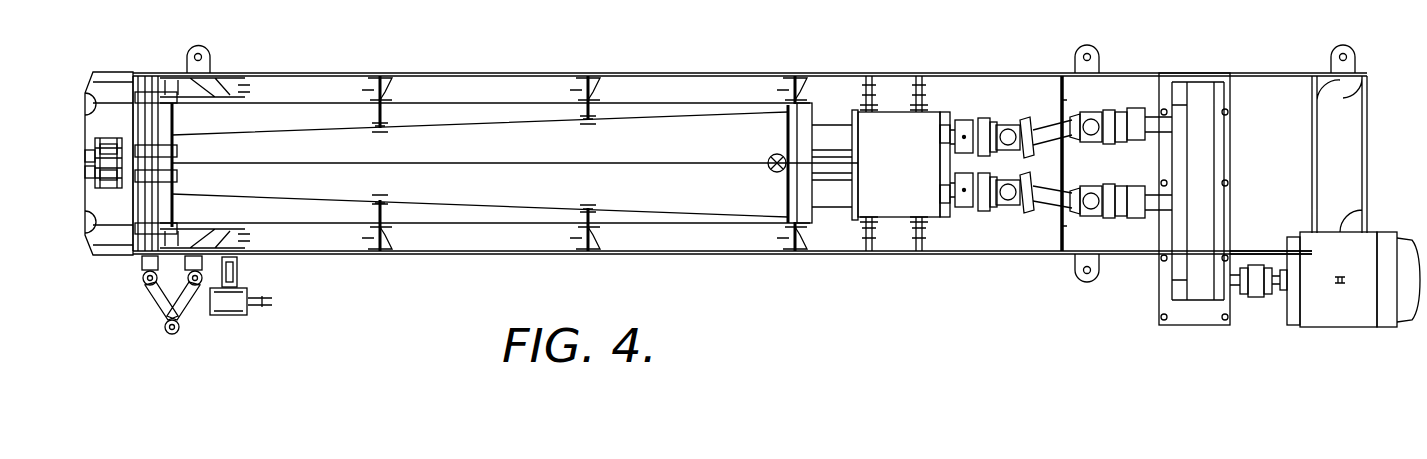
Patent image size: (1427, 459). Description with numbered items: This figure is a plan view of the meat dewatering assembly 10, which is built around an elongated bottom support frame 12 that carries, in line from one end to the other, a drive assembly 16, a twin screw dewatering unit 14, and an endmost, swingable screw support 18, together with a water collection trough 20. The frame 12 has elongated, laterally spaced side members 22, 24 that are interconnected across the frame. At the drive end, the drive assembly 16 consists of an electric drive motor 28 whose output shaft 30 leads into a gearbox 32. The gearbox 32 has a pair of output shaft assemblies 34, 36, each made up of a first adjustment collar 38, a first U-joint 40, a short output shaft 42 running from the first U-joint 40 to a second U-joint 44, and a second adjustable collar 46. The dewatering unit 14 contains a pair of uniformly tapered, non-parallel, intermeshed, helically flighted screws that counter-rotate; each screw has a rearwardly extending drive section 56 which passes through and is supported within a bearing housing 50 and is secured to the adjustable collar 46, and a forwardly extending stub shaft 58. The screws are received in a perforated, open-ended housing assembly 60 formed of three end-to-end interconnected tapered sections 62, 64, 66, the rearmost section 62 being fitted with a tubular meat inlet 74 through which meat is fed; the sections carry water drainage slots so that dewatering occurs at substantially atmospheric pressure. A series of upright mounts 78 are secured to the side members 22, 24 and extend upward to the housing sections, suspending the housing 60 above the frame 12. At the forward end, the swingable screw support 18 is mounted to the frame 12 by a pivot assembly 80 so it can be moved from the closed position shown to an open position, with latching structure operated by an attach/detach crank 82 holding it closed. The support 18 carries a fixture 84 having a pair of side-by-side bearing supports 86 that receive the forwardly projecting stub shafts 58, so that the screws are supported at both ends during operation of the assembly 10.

The meat dewatering assembly 10 is at (775, 322).
The bottom support frame 12 is at (418, 258).
The twin screw dewatering unit 14 is at (545, 101).
The drive assembly 16 is at (1146, 340).
The swingable screw support 18 is at (100, 270).
The water collection trough 20 is at (438, 101).
The side member 22 is at (670, 256).
The side member 24 is at (652, 75).
The electric drive motor 28 is at (1350, 320).
The output shaft 30 is at (1252, 300).
The gearbox 32 is at (1205, 166).
The output shaft assembly 34 is at (1050, 240).
The output shaft assembly 36 is at (1050, 100).
The first adjustment collar 38 is at (1136, 110).
The first U-joint 40 is at (1090, 112).
The short output shaft 42 is at (1055, 192).
The second U-joint 44 is at (1008, 126).
The second adjustable collar 46 is at (962, 120).
The bearing housing 50 is at (893, 200).
The drive section 56 is at (830, 125).
The stub shaft 58 is at (170, 176).
The housing assembly 60 is at (468, 215).
The rearmost housing section 62 is at (690, 122).
The housing section 64 is at (480, 140).
The housing section 66 is at (343, 130).
The tubular meat inlet 74 is at (770, 158).
The upright mounts 78 is at (583, 90).
The pivot assembly 80 is at (148, 330).
The attach/detach crank 82 is at (258, 314).
The fixture 84 is at (95, 180).
The bearing supports 86 is at (116, 144).